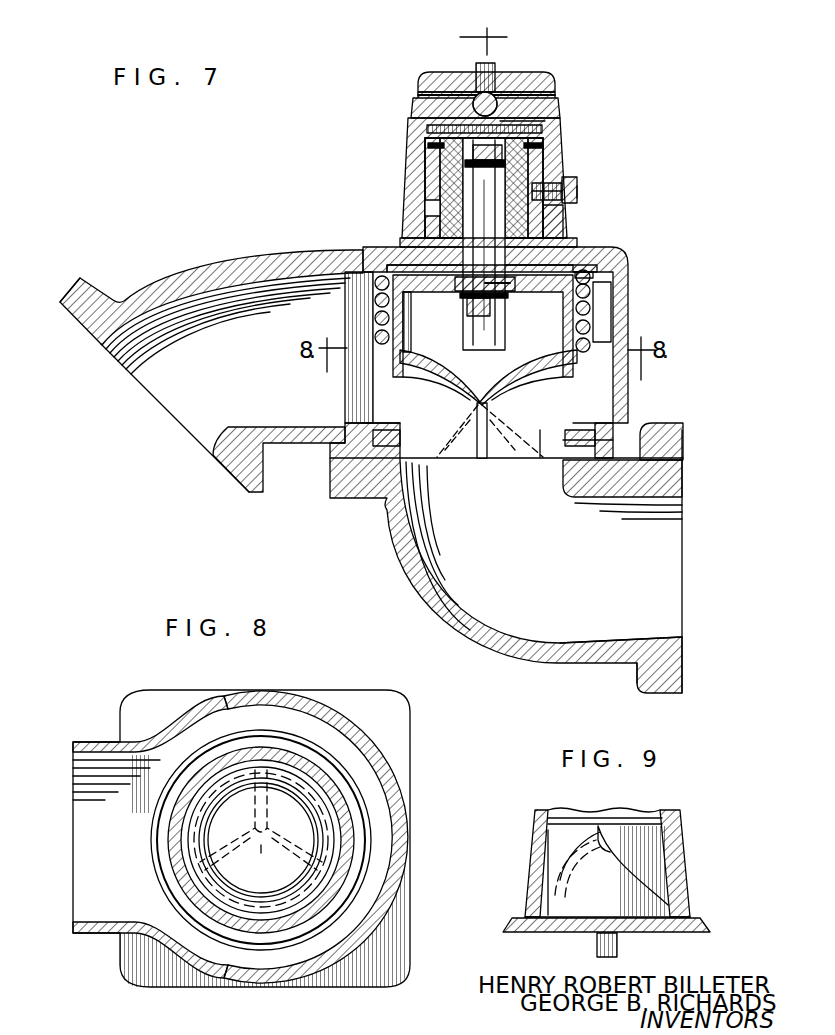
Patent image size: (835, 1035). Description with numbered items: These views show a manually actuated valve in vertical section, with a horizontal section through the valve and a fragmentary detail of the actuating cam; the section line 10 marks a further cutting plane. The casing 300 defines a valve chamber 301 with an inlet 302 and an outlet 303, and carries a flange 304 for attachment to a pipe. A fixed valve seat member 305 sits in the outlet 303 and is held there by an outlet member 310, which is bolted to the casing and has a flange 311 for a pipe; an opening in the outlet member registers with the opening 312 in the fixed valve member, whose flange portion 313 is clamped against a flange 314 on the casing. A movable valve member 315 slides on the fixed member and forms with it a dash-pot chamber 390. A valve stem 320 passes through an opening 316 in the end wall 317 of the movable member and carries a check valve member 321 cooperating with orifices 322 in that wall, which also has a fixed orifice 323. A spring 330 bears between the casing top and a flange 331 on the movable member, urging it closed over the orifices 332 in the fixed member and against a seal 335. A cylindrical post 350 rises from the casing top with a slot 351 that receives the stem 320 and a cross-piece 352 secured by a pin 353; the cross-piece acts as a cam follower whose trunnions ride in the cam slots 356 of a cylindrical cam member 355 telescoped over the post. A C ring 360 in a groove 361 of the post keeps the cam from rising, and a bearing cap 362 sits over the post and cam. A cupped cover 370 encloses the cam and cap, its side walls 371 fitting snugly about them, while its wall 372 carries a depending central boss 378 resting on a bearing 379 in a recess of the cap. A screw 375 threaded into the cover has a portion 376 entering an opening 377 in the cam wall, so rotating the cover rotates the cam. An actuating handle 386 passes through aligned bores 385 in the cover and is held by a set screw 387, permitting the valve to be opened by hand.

In FIG. 7, the section line 10 is at (483, 122).
In FIG. 7, the casing 300 is at (352, 262).
In FIG. 8, the casing 300 is at (93, 738).
In FIG. 7, the valve chamber 301 is at (195, 290).
In FIG. 7, the inlet 302 is at (190, 408).
In FIG. 7, the outlet 303 is at (598, 441).
In FIG. 7, the flange 304 is at (88, 318).
In FIG. 7, the fixed valve seat member 305 is at (440, 387).
In FIG. 8, the fixed valve seat member 305 is at (227, 880).
In FIG. 7, the outlet member 310 is at (440, 614).
In FIG. 7, the flange 311 is at (565, 463).
In FIG. 7, the opening 312 is at (535, 462).
In FIG. 7, the flange portion 313 is at (642, 421).
In FIG. 7, the flange 314 is at (595, 433).
In FIG. 7, the movable valve member 315 is at (590, 306).
In FIG. 8, the movable valve member 315 is at (343, 803).
In FIG. 7, the opening 316 is at (462, 298).
In FIG. 7, the end wall 317 is at (593, 282).
In FIG. 7, the valve stem 320 is at (476, 253).
In FIG. 9, the valve stem 320 is at (618, 946).
In FIG. 7, the check valve member 321 is at (510, 300).
In FIG. 7, the orifices 322 is at (513, 283).
In FIG. 7, the fixed orifice 323 is at (458, 281).
In FIG. 7, the spring 330 is at (592, 327).
In FIG. 7, the flange 331 is at (572, 360).
In FIG. 8, the flange 331 is at (353, 843).
In FIG. 7, the orifices 332 is at (485, 410).
In FIG. 8, the orifices 332 is at (273, 812).
In FIG. 7, the seal 335 is at (572, 432).
In FIG. 7, the post 350 is at (445, 232).
In FIG. 9, the post 350 is at (555, 933).
In FIG. 7, the slot 351 is at (565, 228).
In FIG. 7, the cross-piece 352 is at (545, 155).
In FIG. 7, the pin 353 is at (504, 162).
In FIG. 7, the cam member 355 is at (570, 240).
In FIG. 9, the cam member 355 is at (560, 838).
In FIG. 7, the cam slots 356 is at (433, 207).
In FIG. 9, the cam slots 356 is at (665, 878).
In FIG. 7, the C ring 360 is at (432, 150).
In FIG. 9, the C ring 360 is at (566, 822).
In FIG. 7, the groove 361 is at (535, 137).
In FIG. 7, the bearing cap 362 is at (475, 134).
In FIG. 7, the cover 370 is at (405, 191).
In FIG. 9, the cover 370 is at (523, 897).
In FIG. 7, the side walls 371 is at (412, 170).
In FIG. 7, the wall 372 is at (452, 113).
In FIG. 7, the screw 375 is at (580, 200).
In FIG. 7, the portion 376 is at (578, 212).
In FIG. 7, the opening 377 is at (565, 182).
In FIG. 7, the central boss 378 is at (478, 99).
In FIG. 7, the bearing 379 is at (530, 122).
In FIG. 7, the aligned bores 385 is at (418, 119).
In FIG. 7, the actuating handle 386 is at (545, 84).
In FIG. 7, the set screw 387 is at (498, 70).
In FIG. 7, the dash-pot chamber 390 is at (635, 341).